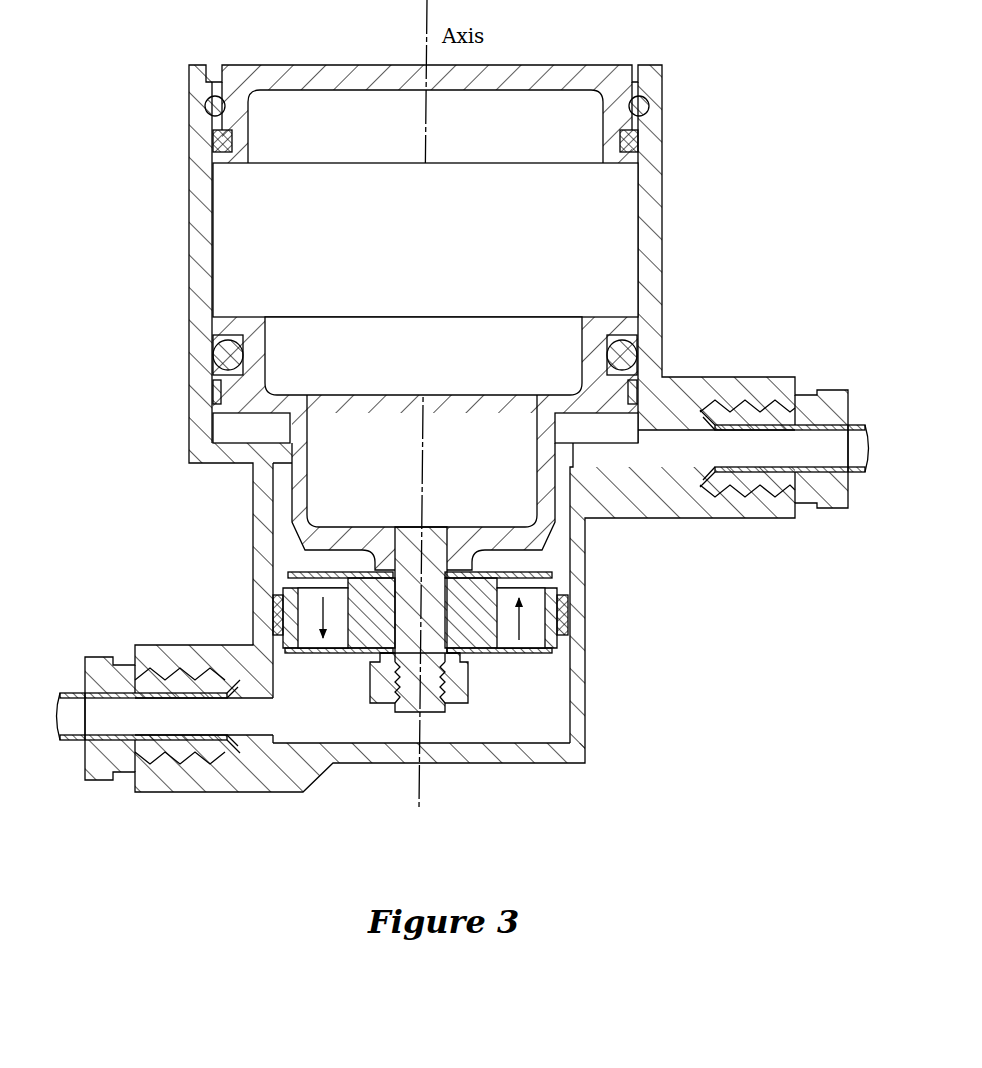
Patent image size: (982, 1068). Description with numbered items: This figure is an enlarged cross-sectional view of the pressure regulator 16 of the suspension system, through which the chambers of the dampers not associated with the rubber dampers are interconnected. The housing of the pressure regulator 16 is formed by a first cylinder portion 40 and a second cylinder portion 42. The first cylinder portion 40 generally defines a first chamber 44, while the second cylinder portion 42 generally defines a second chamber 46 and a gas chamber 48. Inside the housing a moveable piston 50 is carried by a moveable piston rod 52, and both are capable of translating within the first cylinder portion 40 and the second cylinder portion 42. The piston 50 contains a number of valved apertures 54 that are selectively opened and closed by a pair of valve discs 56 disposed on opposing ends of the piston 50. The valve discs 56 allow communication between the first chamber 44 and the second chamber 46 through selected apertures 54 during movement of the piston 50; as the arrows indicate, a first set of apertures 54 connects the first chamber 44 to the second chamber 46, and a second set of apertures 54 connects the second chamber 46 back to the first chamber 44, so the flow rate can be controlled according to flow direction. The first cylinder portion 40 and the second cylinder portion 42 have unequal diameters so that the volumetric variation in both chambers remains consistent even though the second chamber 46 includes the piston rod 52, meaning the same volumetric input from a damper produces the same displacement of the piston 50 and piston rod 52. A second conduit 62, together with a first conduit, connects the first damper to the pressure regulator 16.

The pressure regulator 16 is at (523, 766).
The first cylinder portion 40 is at (578, 580).
The second cylinder portion 42 is at (200, 345).
The first chamber 44 is at (334, 712).
The second chamber 46 is at (234, 434).
The gas chamber 48 is at (334, 241).
The moveable piston 50 is at (545, 571).
The moveable piston rod 52 is at (230, 405).
The valved apertures 54 is at (273, 612).
The valve discs 56 is at (290, 572).
The second conduit 62 is at (78, 692).